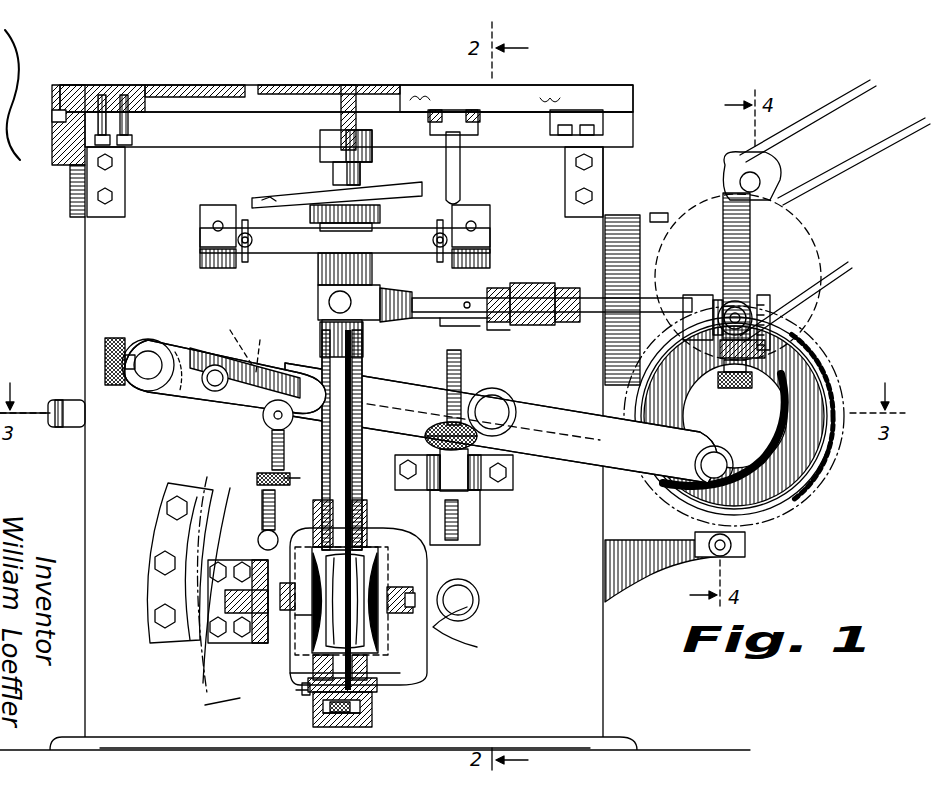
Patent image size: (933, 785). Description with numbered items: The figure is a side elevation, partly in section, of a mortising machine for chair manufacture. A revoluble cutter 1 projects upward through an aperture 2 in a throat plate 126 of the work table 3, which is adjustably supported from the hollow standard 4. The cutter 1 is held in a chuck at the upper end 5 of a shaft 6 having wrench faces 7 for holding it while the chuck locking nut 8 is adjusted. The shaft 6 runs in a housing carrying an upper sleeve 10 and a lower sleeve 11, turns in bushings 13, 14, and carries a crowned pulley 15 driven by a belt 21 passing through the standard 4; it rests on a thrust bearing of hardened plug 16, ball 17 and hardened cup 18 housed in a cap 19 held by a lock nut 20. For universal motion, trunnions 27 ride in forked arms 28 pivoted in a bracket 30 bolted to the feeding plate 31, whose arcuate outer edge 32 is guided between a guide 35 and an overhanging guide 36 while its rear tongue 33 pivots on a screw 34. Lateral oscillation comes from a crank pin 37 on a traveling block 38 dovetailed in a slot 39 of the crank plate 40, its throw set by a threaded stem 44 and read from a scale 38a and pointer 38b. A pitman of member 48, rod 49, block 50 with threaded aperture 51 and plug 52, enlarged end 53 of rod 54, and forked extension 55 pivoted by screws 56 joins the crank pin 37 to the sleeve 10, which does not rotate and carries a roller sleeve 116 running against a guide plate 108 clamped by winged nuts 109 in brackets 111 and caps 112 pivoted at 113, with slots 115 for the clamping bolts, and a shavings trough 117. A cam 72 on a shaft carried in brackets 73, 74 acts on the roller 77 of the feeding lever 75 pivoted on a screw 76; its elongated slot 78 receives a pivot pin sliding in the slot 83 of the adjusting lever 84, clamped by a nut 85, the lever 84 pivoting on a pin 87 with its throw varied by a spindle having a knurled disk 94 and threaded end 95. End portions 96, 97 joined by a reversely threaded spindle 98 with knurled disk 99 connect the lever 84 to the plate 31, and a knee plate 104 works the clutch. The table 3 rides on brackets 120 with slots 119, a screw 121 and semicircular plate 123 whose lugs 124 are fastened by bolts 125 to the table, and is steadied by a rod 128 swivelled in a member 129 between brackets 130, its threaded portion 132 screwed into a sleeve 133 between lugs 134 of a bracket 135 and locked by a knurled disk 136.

The revoluble cutter 1 is at (338, 123).
The aperture 2 is at (300, 84).
The table 3 is at (200, 83).
The hollow standard 4 is at (82, 258).
The upper end 5 is at (332, 176).
The shaft 6 is at (364, 362).
The flattened wrench receiving faces 7 is at (361, 180).
The locking nut 8 is at (373, 146).
The sleeve 10 is at (317, 307).
The sleeve 11 is at (419, 469).
The bushing 13 is at (392, 646).
The bushing 14 is at (380, 672).
The crowned and flanged pulley 15 is at (345, 600).
The hardened plug 16 is at (310, 696).
The ball 17 is at (372, 701).
The hardened cup 18 is at (322, 712).
The cap 19 is at (372, 723).
The lock nut 20 is at (302, 690).
The belt 21 is at (320, 630).
The trunnions 27 is at (402, 593).
The forked arms 28 is at (290, 583).
The bracket 30 is at (235, 597).
The feeding plate 31 is at (210, 660).
The arcuate outer edge 32 is at (190, 652).
The apertured rear tongue 33 is at (473, 628).
The bolt or screw 34 is at (478, 604).
The guide 35 is at (226, 498).
The overhanging guide 36 is at (200, 537).
The crank pin 37 is at (750, 313).
The traveling block 38 is at (787, 252).
The scale 38a is at (772, 314).
The pointer 38b is at (770, 342).
The slot 39 is at (733, 203).
The crank plate 40 is at (786, 246).
The threaded stem 44 is at (798, 292).
The member 48 is at (726, 262).
The rod 49 is at (574, 288).
The block 50 is at (540, 284).
The threaded aperture 51 is at (510, 324).
The threaded plug 52 is at (490, 320).
The enlarged end 53 is at (500, 288).
The rod 54 is at (440, 320).
The forked extension 55 is at (385, 296).
The screws 56 is at (320, 283).
The cam 72 is at (766, 396).
The brackets 73 is at (626, 248).
The brackets 74 is at (640, 560).
The feeding lever 75 is at (501, 423).
The screw 76 is at (490, 406).
The cam follower roller 77 is at (694, 472).
The elongated slot 78 is at (235, 335).
The elongated slot 83 is at (224, 392).
The adjusting lever 84 is at (176, 352).
The nut 85 is at (200, 378).
The pin 87 is at (148, 351).
The adjusting knurled disk 94 is at (104, 352).
The threaded inner end 95 is at (267, 345).
The enlarged end portion 96 is at (270, 442).
The enlarged end portion 97 is at (258, 540).
The spindle 98 is at (258, 474).
The knurled adjusting disk 99 is at (290, 477).
The curved plate 104 is at (62, 428).
The forward plate 108 is at (345, 240).
The winged nuts 109 is at (252, 237).
The brackets 111 is at (200, 256).
The caps 112 is at (200, 232).
The pivot 113 is at (468, 288).
The slots 115 is at (490, 236).
The roller sleeve 116 is at (383, 224).
The trough 117 is at (272, 196).
The slots 119 is at (54, 116).
The brackets 120 is at (72, 196).
The screw 121 is at (58, 96).
The semicircular plate 123 is at (102, 96).
The inwardly projecting arms or lugs 124 is at (132, 140).
The bolts 125 is at (124, 96).
The throat plate 126 is at (255, 83).
The rod 128 is at (462, 178).
The member 129 is at (452, 115).
The brackets 130 is at (480, 129).
The threaded lower portion 132 is at (482, 514).
The sleeve 133 is at (440, 480).
The lugs 134 is at (426, 440).
The bracket 135 is at (515, 476).
The knurled disk 136 is at (446, 420).